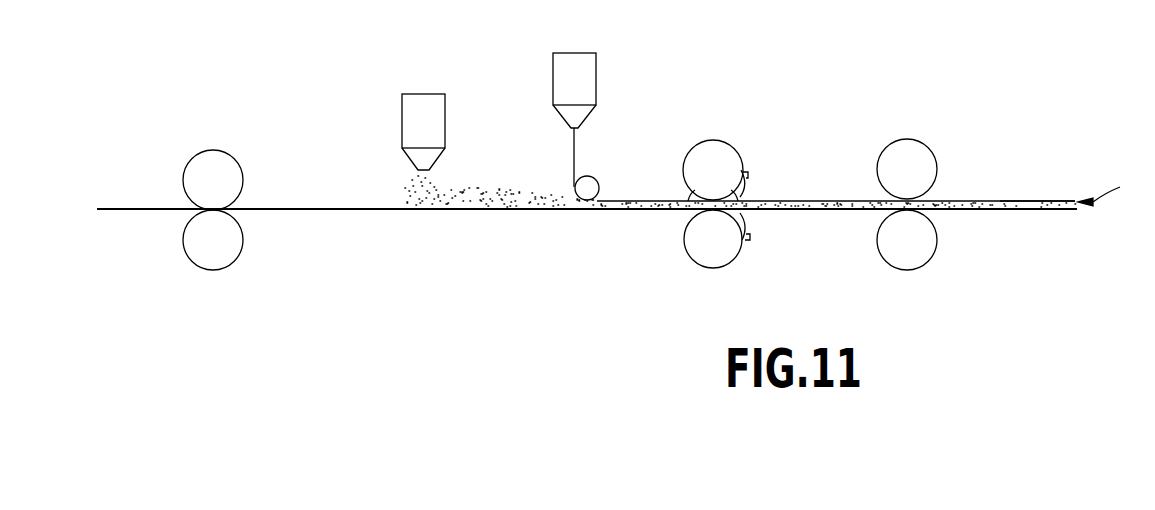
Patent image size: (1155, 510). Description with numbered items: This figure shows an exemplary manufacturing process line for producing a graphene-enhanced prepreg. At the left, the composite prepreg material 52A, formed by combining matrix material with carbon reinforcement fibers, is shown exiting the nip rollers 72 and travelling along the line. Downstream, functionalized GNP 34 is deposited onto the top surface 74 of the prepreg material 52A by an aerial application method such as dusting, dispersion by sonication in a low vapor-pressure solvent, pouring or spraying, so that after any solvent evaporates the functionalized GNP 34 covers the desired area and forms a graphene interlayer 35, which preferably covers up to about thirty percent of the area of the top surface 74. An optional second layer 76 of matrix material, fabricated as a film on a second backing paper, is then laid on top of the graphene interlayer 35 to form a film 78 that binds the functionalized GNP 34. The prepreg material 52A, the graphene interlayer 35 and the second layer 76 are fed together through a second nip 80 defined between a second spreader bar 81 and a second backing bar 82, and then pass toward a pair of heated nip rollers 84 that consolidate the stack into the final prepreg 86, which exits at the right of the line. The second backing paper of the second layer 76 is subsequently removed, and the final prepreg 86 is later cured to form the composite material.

The functionalized GNP 34 is at (445, 199).
The graphene interlayer 35 is at (1037, 200).
The composite prepreg material 52A is at (316, 211).
The nip rollers 72 is at (222, 232).
The top surface 74 is at (367, 209).
The second layer of matrix material 76 is at (575, 147).
The film 78 is at (642, 200).
The second nip 80 is at (745, 200).
The second spreader bar 81 is at (748, 180).
The second backing bar 82 is at (750, 230).
The heated nip rollers 84 is at (910, 150).
The final prepreg 86 is at (1112, 184).